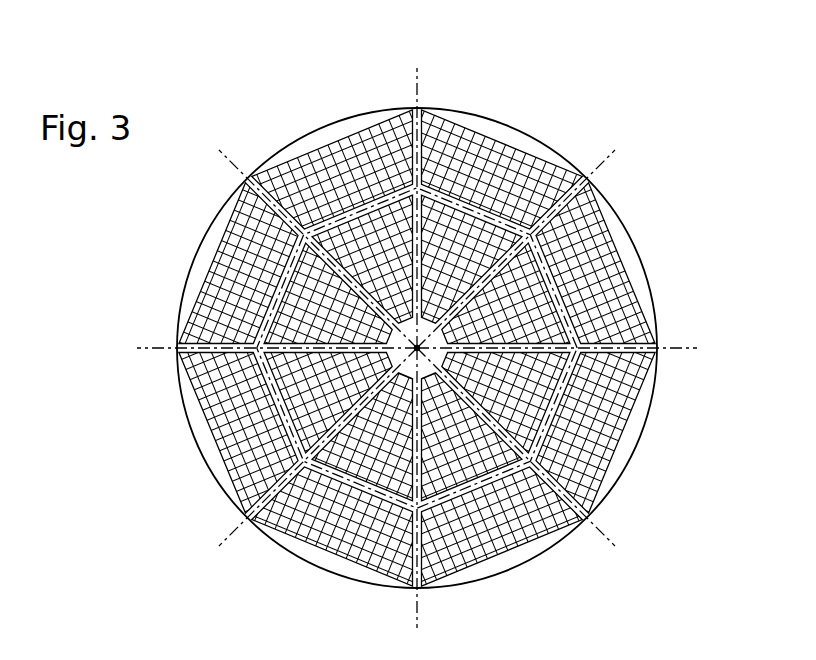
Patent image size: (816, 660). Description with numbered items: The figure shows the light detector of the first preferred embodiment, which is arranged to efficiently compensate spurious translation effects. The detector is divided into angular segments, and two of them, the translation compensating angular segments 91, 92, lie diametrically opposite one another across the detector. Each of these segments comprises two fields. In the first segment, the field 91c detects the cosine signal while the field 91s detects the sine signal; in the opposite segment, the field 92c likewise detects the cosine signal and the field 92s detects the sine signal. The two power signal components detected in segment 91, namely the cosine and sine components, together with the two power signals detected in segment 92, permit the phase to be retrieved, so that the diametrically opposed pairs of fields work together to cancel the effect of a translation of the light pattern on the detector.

The translation compensating angular segment 91 is at (483, 100).
The cosine field 91c is at (510, 168).
The sine field 91s is at (476, 266).
The translation compensating angular segment 92 is at (270, 557).
The sine field 92s is at (350, 445).
The cosine field 92c is at (358, 540).